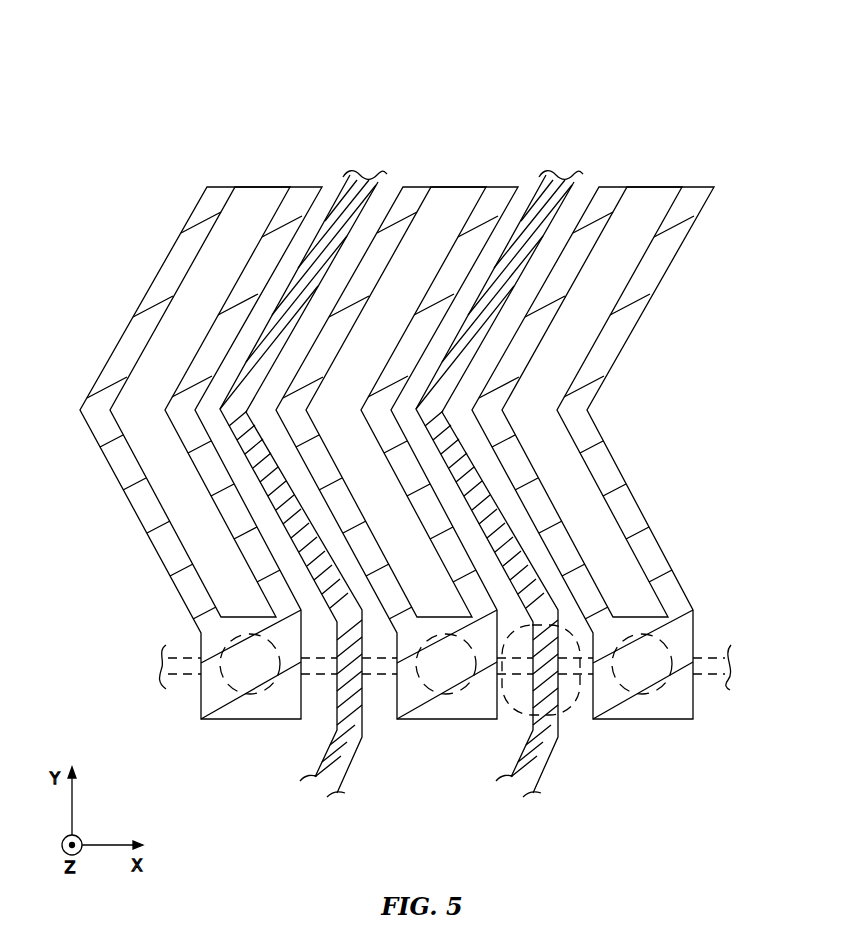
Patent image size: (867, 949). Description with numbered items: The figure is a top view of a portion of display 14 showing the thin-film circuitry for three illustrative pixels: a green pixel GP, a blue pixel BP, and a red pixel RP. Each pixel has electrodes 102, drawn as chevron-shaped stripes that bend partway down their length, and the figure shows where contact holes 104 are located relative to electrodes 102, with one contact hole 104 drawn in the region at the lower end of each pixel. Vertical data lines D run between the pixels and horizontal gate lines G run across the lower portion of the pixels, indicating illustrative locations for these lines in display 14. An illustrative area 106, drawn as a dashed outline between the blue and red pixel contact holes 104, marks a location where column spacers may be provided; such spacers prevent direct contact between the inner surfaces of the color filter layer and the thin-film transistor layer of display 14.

The display 14 is at (694, 66).
The electrodes 102 is at (163, 290).
The contact holes 104 is at (258, 694).
The illustrative area 106 is at (570, 714).